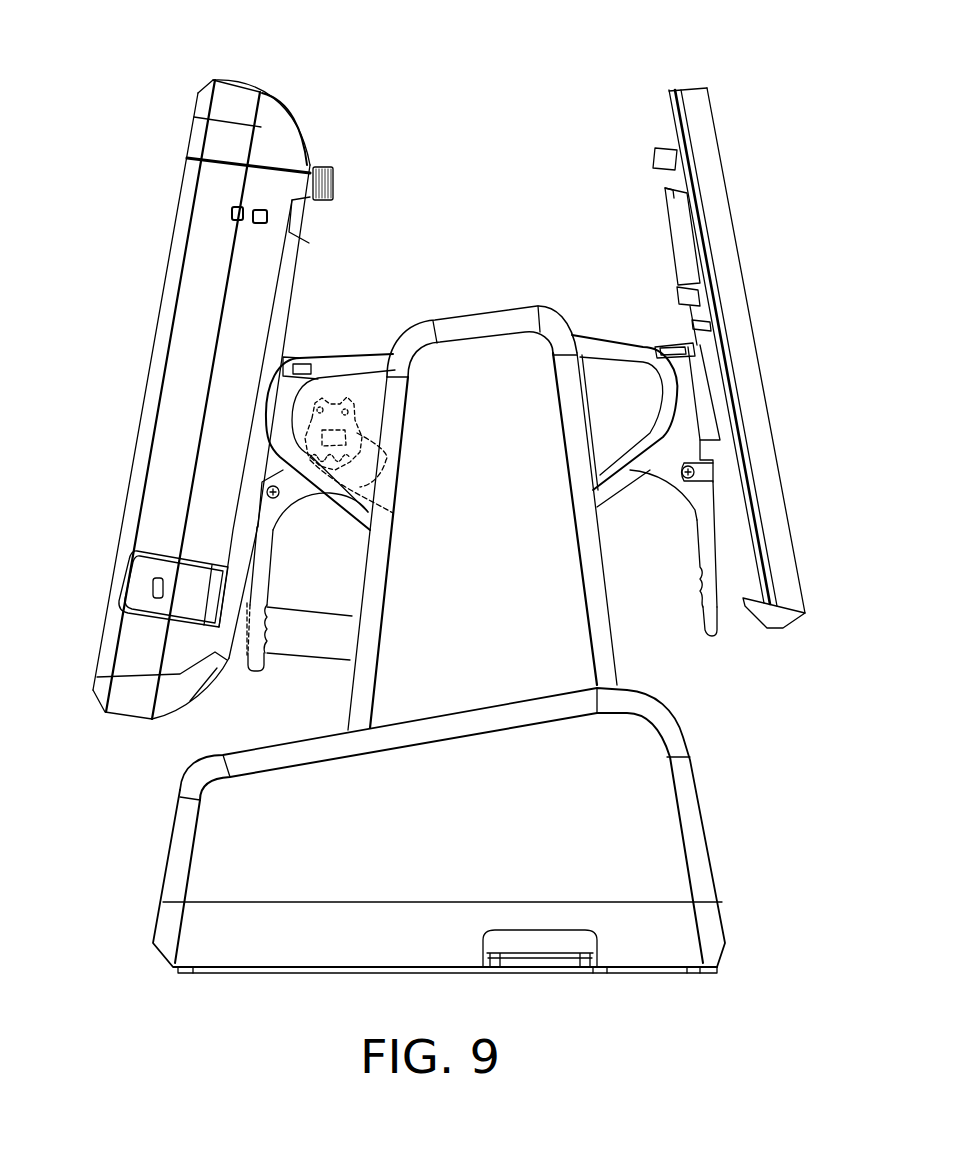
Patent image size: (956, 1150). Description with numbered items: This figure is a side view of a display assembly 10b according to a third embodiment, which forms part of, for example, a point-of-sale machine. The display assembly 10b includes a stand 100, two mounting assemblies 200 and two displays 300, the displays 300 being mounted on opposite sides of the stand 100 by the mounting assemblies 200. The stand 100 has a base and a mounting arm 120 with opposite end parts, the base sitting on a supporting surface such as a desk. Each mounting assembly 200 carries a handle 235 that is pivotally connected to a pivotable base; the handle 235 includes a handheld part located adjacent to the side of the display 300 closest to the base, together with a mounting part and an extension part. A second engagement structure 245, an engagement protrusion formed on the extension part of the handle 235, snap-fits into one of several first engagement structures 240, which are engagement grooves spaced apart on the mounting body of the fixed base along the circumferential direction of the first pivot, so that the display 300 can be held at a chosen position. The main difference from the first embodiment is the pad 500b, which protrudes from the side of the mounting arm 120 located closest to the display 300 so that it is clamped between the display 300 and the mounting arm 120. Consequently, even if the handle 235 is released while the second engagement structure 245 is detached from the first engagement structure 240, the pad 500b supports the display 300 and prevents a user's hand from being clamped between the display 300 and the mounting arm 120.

The display assembly 10b is at (203, 70).
The stand 100 is at (441, 317).
The mounting arm 120 is at (560, 663).
The mounting assembly 200 is at (272, 665).
The handle 235 is at (244, 670).
The first engagement structure 240 is at (359, 470).
The second engagement structure 245 is at (378, 440).
The display 300 is at (205, 244).
The pad 500b is at (297, 623).